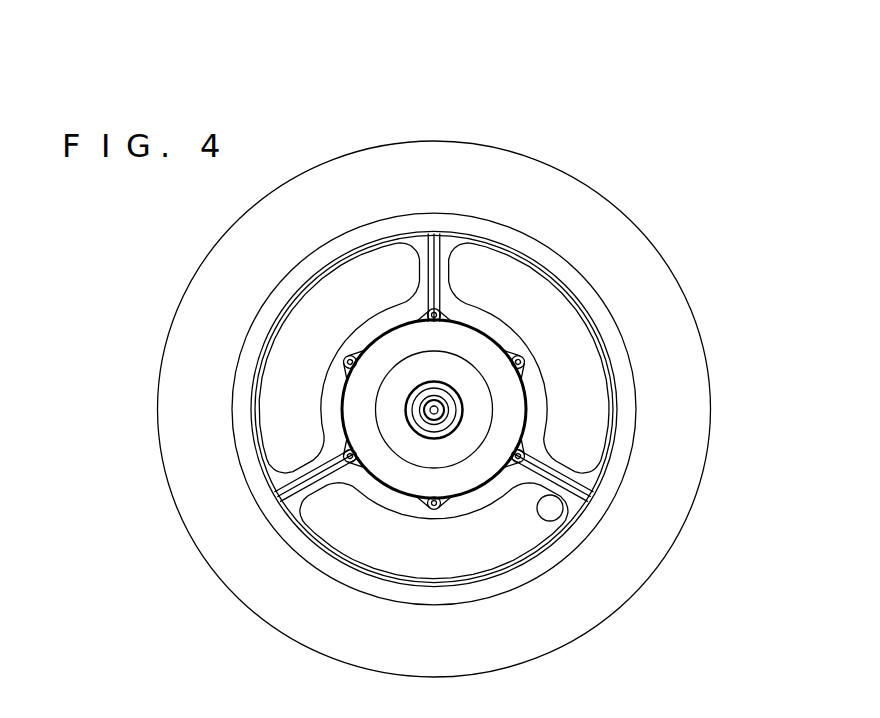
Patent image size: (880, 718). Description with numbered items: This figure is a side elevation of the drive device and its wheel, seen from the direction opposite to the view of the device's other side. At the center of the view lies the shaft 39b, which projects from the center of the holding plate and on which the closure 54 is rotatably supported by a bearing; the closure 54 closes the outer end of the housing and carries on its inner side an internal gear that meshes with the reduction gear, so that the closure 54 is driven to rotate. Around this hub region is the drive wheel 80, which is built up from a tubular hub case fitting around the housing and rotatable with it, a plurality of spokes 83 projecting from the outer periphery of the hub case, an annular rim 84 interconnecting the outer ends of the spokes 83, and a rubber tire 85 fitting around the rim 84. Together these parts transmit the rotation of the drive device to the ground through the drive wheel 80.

The drive wheel 80 is at (618, 93).
The spokes 83 is at (543, 248).
The annular rim 84 is at (437, 277).
The rubber tire 85 is at (633, 243).
The shaft 39b is at (442, 409).
The closure 54 is at (472, 479).